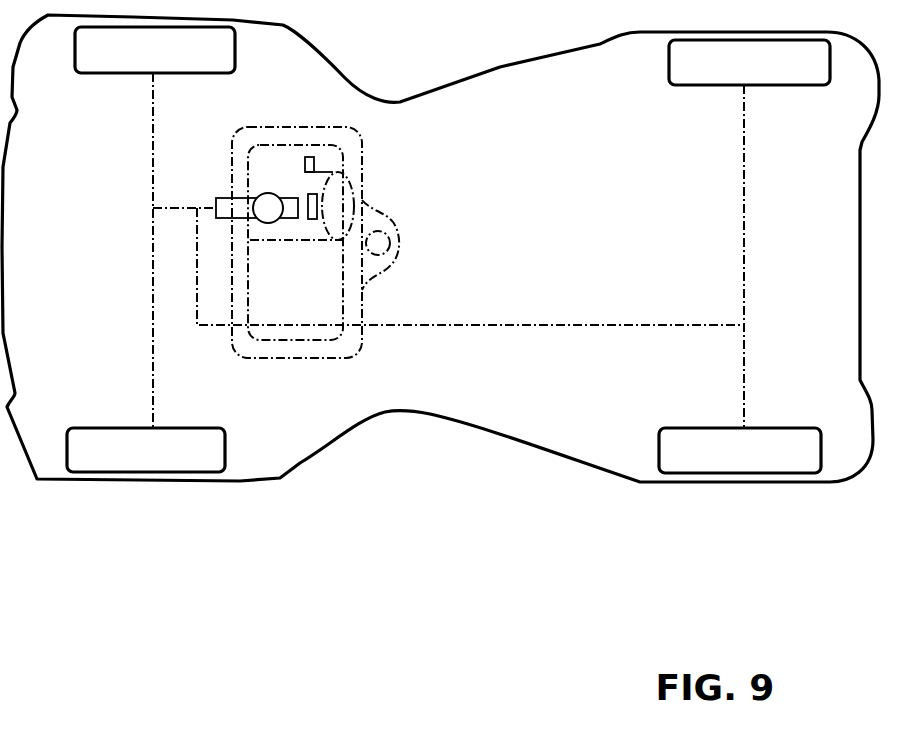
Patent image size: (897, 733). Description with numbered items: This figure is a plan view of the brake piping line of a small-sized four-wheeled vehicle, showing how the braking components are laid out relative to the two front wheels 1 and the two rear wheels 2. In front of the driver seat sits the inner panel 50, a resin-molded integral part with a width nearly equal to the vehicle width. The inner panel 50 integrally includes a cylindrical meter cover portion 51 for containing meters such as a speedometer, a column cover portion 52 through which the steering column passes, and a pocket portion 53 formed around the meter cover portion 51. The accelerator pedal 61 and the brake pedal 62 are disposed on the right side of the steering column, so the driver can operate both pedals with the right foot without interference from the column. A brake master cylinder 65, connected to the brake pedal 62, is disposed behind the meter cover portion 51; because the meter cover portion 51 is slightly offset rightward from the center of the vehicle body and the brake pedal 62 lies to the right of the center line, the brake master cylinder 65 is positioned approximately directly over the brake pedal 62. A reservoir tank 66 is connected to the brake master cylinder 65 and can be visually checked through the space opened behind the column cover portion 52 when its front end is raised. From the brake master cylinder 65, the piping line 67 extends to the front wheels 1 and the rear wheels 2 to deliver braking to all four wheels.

The front wheels 1 is at (97, 75).
The rear wheels 2 is at (795, 85).
The inner panel 50 is at (357, 128).
The meter cover portion 51 is at (284, 236).
The column cover portion 52 is at (380, 218).
The pocket portion 53 is at (290, 340).
The accelerator pedal 61 is at (310, 157).
The brake pedal 62 is at (313, 222).
The brake master cylinder 65 is at (224, 198).
The reservoir tank 66 is at (262, 197).
The piping line 67 is at (555, 328).